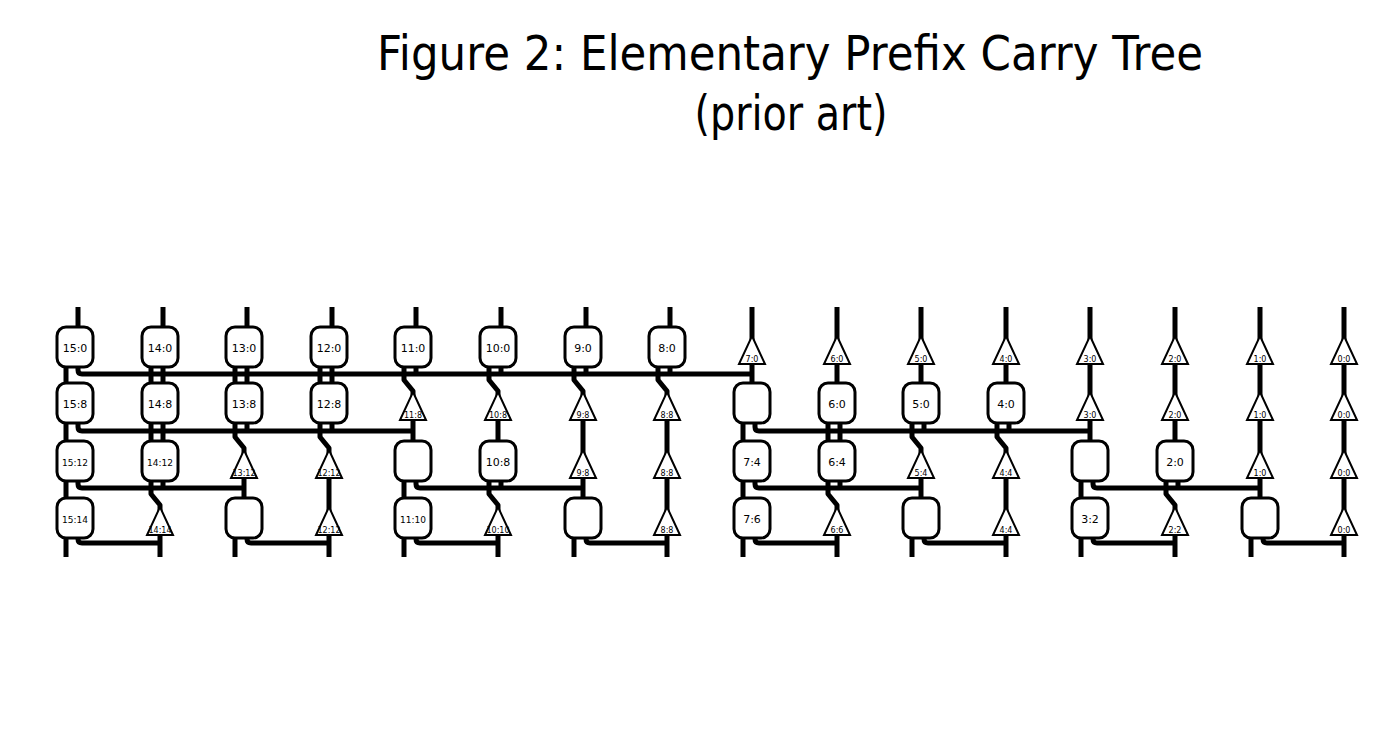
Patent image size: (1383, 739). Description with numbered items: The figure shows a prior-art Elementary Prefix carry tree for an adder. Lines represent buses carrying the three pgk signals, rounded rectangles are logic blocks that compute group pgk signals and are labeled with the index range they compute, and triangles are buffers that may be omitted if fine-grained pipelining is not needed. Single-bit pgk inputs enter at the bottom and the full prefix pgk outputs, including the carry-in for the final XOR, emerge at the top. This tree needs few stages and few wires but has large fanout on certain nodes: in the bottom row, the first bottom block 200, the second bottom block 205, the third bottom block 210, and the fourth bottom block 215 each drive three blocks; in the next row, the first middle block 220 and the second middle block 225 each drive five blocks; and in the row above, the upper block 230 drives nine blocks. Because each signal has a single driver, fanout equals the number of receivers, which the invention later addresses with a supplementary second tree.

The block 1:0 200 is at (1245, 538).
The block 5:4 205 is at (906, 538).
The block 9:8 210 is at (568, 538).
The block 13:12 215 is at (229, 538).
The block 3:0 220 is at (1075, 480).
The block 11:8 225 is at (398, 480).
The block 7:0 230 is at (737, 422).